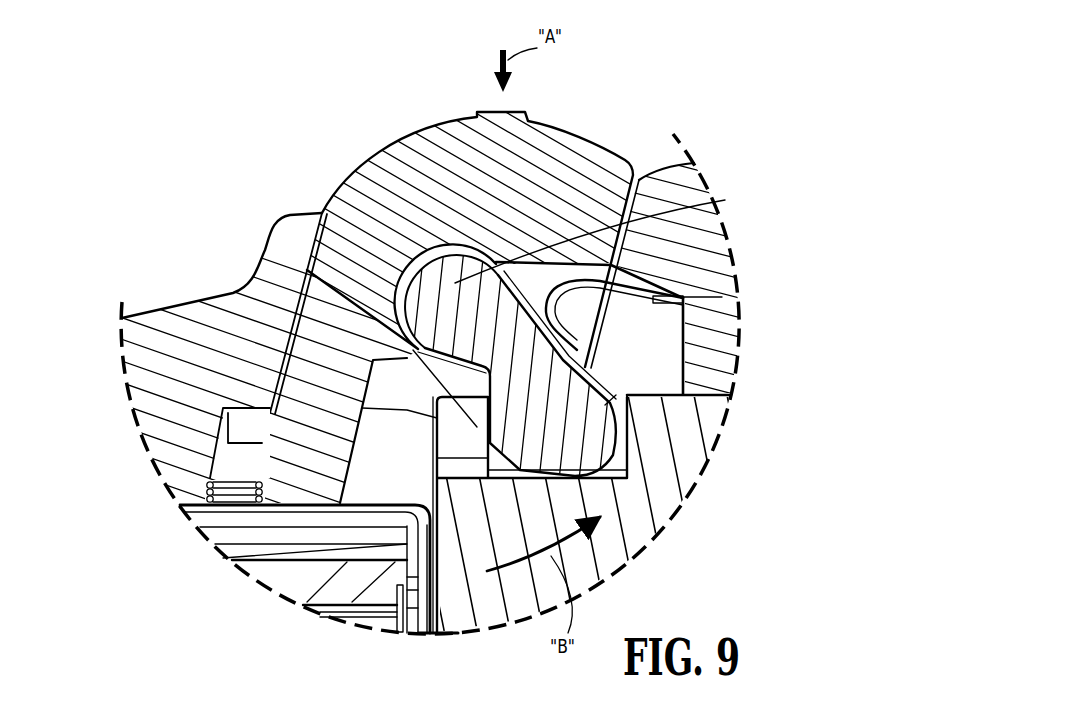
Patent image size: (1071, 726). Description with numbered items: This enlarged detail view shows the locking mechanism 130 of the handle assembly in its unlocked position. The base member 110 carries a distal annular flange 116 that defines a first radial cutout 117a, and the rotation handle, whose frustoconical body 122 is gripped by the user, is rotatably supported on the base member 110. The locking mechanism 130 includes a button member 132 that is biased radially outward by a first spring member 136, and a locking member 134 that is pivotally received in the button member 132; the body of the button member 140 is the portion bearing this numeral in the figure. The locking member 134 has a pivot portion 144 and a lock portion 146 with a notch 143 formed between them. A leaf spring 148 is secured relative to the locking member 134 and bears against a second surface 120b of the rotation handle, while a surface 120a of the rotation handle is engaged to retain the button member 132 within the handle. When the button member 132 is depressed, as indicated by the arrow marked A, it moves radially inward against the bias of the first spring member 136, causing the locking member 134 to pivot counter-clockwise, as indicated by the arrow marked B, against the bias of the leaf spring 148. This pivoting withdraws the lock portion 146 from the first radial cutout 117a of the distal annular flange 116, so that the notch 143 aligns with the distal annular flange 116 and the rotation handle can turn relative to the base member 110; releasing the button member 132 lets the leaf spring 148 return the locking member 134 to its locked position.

The base member 110 is at (468, 620).
The distal annular flange 116 is at (433, 443).
The first radial cutout 117a is at (413, 350).
The surface of the rotation handle 120a is at (668, 297).
The second surface of the rotation handle 120b is at (243, 410).
The frustoconical body 122 is at (140, 337).
The locking mechanism 130 is at (317, 107).
The button member 132 is at (607, 140).
The locking member 134 is at (530, 296).
The first spring member 136 is at (225, 490).
The latch body 140 is at (378, 173).
The notch 143 is at (318, 252).
The pivot portion 144 is at (603, 234).
The lock portion 146 is at (582, 440).
The leaf spring 148 is at (563, 325).